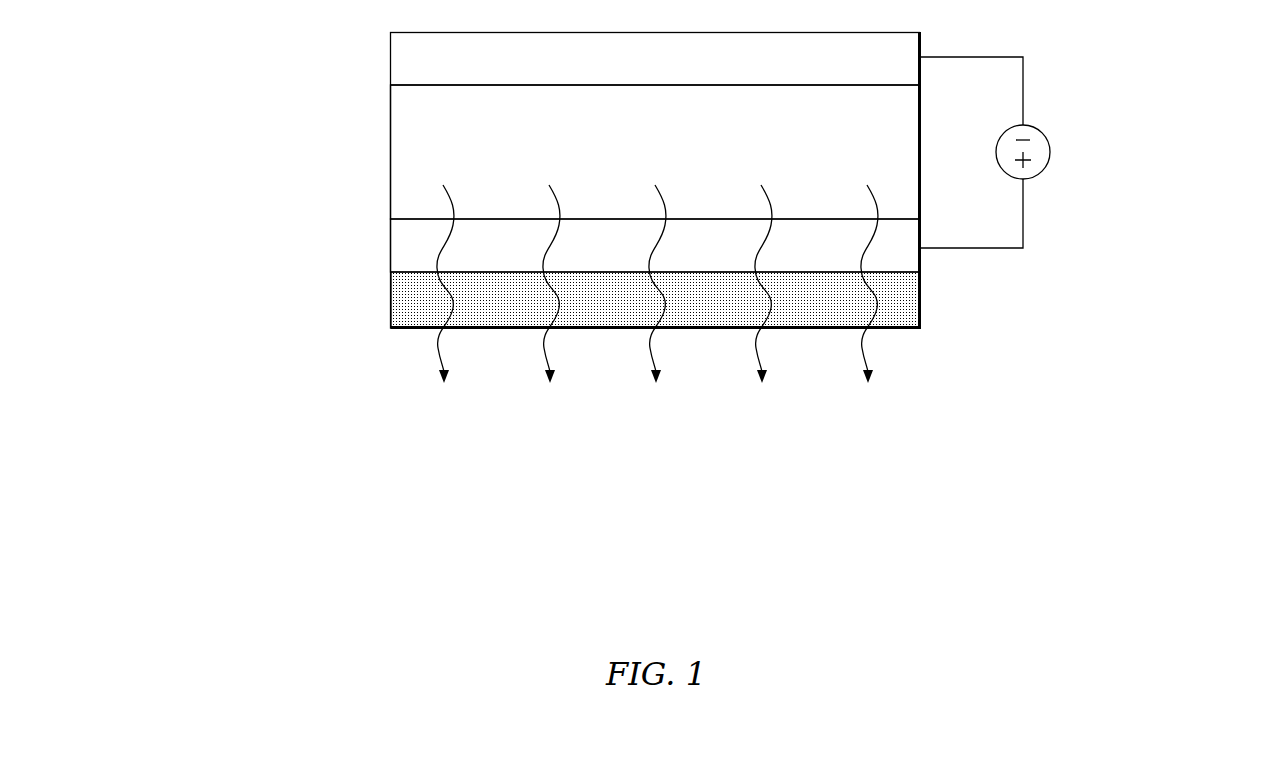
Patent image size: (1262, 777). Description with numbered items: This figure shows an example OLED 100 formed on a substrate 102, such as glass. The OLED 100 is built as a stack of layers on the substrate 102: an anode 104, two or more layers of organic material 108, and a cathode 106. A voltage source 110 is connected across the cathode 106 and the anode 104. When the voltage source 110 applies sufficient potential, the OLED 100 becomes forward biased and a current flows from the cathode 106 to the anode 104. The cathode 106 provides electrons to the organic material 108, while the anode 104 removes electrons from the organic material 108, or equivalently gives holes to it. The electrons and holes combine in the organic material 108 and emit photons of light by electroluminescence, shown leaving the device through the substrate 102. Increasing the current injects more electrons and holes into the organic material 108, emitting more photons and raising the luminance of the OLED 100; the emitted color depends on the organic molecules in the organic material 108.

The OLED 100 is at (632, 304).
The substrate 102 is at (367, 303).
The anode 104 is at (367, 250).
The cathode 106 is at (367, 60).
The organic material 108 is at (367, 153).
The voltage source 110 is at (1060, 152).